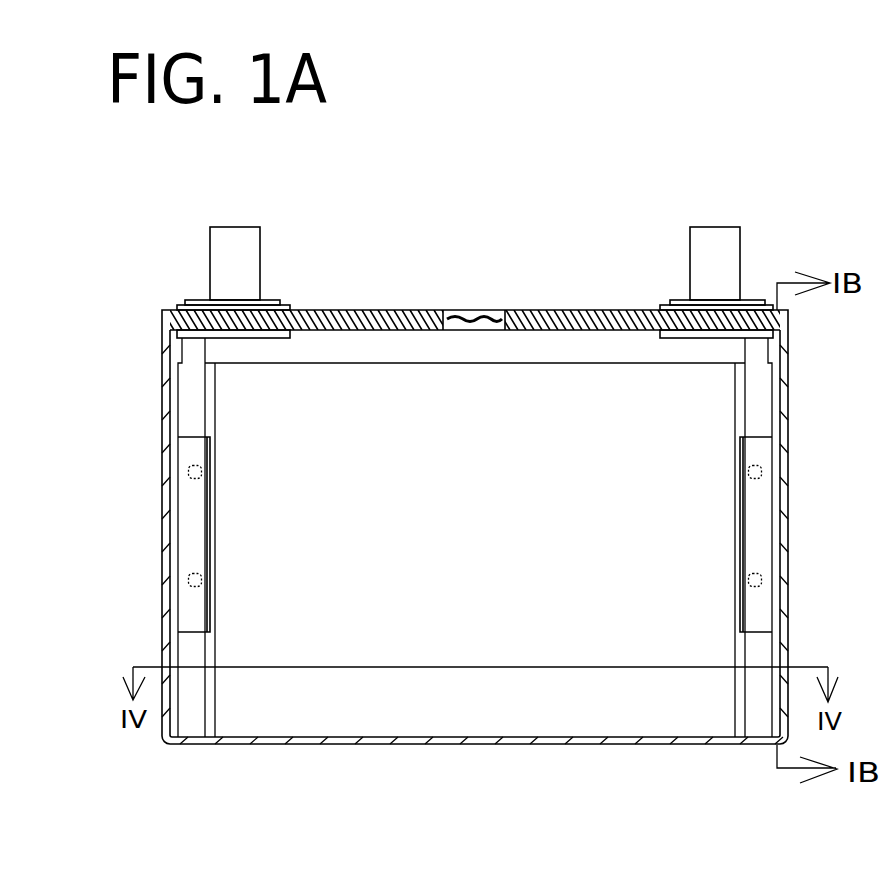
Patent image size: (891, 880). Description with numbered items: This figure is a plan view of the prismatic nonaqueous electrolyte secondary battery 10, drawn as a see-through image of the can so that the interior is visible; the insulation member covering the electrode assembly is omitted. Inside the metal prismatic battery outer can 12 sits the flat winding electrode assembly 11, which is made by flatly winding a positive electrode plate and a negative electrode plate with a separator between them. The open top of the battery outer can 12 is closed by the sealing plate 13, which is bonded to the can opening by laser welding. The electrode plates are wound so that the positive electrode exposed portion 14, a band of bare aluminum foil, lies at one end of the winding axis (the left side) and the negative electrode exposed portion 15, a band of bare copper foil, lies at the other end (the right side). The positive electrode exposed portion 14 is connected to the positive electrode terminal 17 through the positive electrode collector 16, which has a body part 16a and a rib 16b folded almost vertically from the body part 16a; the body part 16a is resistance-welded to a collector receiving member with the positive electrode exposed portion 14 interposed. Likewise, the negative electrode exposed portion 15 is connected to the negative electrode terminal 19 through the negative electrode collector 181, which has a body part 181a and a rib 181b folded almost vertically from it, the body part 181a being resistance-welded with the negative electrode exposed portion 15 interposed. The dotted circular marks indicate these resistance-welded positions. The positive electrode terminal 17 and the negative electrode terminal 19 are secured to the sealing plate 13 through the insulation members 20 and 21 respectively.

The prismatic nonaqueous electrolyte secondary battery 10 is at (114, 208).
The flat winding electrode assembly 11 is at (495, 609).
The battery outer can 12 is at (530, 744).
The sealing plate 13 is at (513, 310).
The positive electrode exposed portion 14 is at (193, 652).
The negative electrode exposed portion 15 is at (757, 650).
The positive electrode collector 16 is at (172, 522).
The body part 16a is at (195, 452).
The rib 16b is at (208, 558).
The positive electrode terminal 17 is at (252, 240).
The negative electrode collector 181 is at (768, 532).
The body part 181a is at (755, 498).
The rib 181b is at (740, 558).
The negative electrode terminal 19 is at (703, 236).
The insulation member 20 is at (290, 307).
The insulation member 21 is at (664, 306).